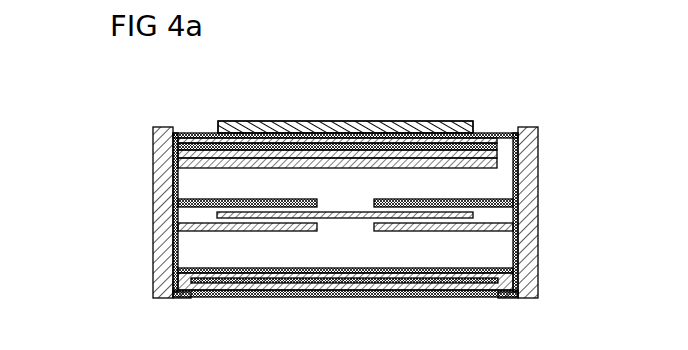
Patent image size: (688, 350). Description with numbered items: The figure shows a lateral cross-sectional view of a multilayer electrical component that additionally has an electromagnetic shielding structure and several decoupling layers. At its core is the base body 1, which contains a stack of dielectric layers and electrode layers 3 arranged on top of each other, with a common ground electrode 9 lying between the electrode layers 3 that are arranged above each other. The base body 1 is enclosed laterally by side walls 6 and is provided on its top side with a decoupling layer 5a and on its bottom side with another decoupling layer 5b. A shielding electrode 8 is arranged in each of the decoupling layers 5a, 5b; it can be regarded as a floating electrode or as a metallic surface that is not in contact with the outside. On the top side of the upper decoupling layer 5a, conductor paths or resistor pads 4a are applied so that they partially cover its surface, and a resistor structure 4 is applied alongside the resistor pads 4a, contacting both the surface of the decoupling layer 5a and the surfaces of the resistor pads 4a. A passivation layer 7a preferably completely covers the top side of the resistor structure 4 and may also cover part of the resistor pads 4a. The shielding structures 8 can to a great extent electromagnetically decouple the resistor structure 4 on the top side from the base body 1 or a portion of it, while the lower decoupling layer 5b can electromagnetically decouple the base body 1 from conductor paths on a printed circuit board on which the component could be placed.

The base body 1 is at (184, 186).
The electrode layers 3 is at (511, 197).
The resistor structure 4 is at (350, 126).
The resistor pads 4a is at (231, 130).
The decoupling layer 5a is at (183, 137).
The decoupling layer 5b is at (345, 293).
The housing side walls 6 is at (160, 245).
The passivation layer 7a is at (486, 155).
The shielding electrode 8 is at (486, 145).
The common ground electrode 9 is at (330, 221).